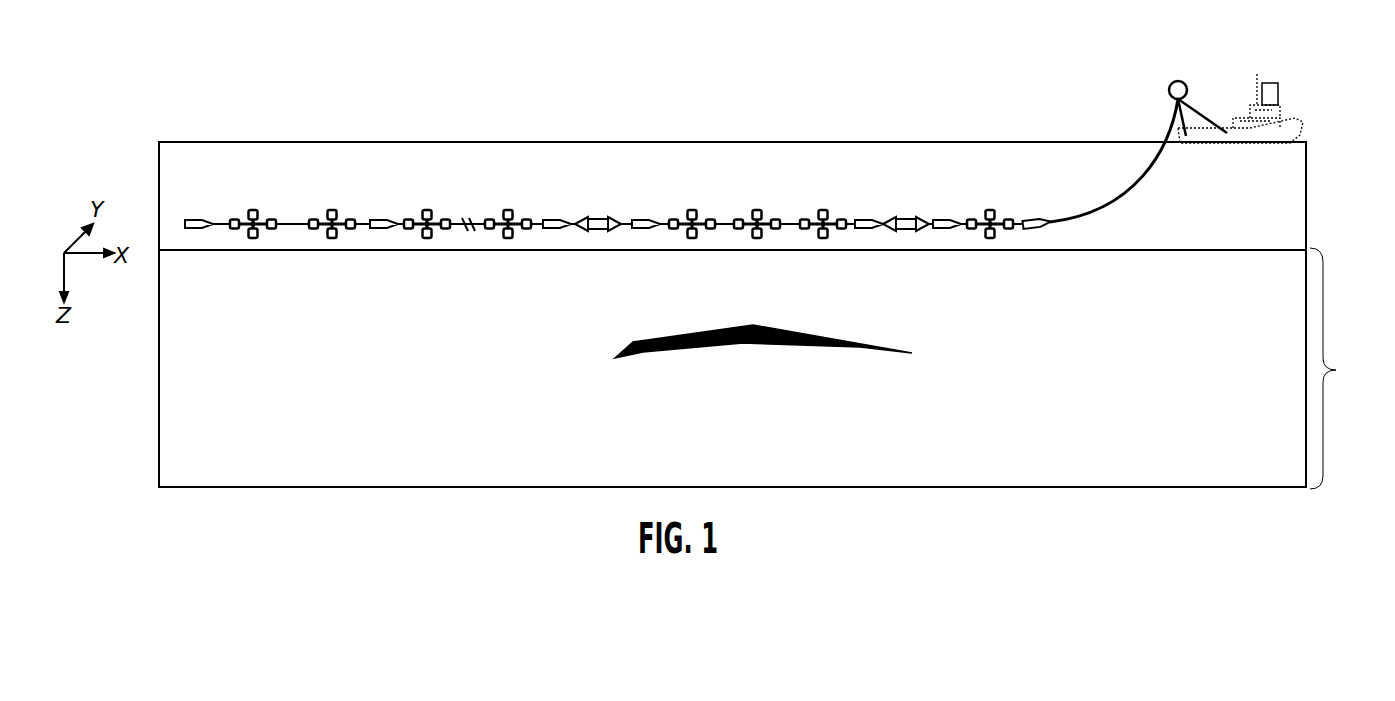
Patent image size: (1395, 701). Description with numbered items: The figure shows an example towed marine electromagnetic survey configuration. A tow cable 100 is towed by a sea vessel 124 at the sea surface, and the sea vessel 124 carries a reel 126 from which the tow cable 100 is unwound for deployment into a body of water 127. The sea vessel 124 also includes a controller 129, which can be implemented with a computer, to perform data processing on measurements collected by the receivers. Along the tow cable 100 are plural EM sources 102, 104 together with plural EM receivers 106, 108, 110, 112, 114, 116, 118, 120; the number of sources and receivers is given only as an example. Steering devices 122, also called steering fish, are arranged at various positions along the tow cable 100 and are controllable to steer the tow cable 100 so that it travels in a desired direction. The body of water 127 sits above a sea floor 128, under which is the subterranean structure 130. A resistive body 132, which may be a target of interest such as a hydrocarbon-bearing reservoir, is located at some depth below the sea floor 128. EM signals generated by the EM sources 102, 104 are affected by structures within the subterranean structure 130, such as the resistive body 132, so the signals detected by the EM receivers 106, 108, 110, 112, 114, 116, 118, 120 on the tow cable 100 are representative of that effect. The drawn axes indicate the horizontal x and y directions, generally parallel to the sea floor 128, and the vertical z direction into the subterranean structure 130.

The tow cable 100 is at (1157, 153).
The EM source 102 is at (905, 217).
The EM source 104 is at (595, 216).
The EM receiver 106 is at (992, 207).
The EM receiver 108 is at (822, 207).
The EM receiver 110 is at (757, 207).
The EM receiver 112 is at (692, 207).
The EM receiver 114 is at (508, 207).
The EM receiver 116 is at (427, 207).
The EM receiver 118 is at (332, 207).
The EM receiver 120 is at (253, 207).
The steering device 122 is at (195, 220).
The sea vessel 124 is at (1300, 122).
The reel 126 is at (1180, 80).
The body of water 127 is at (1250, 181).
The sea floor 128 is at (1205, 249).
The controller 129 is at (1278, 87).
The subterranean structure 130 is at (1243, 368).
The resistive body 132 is at (747, 345).